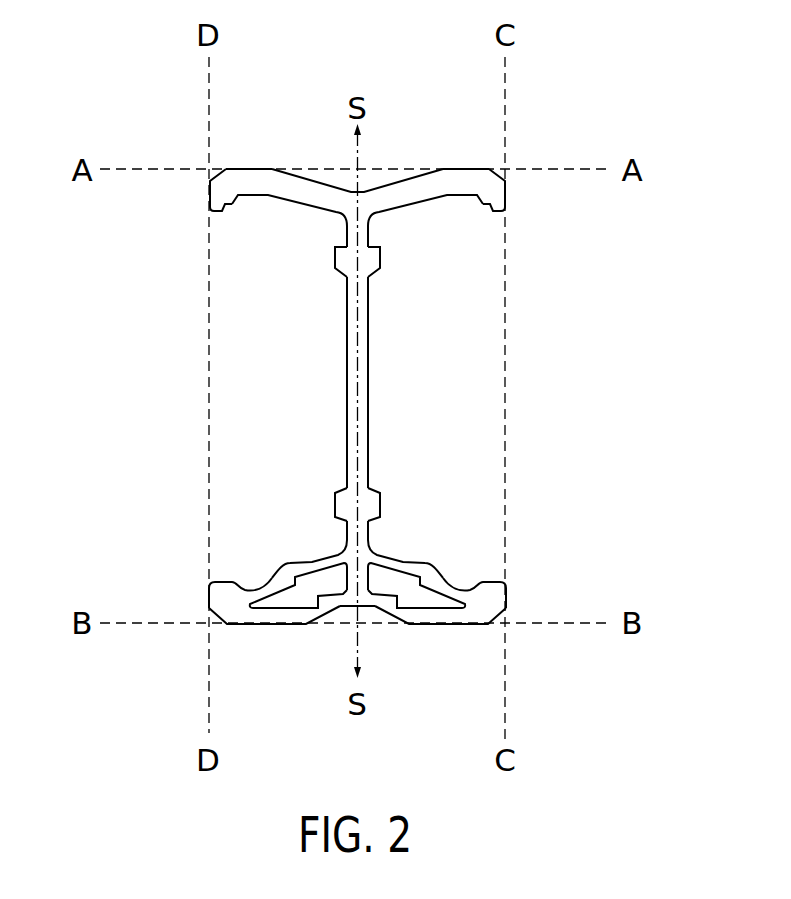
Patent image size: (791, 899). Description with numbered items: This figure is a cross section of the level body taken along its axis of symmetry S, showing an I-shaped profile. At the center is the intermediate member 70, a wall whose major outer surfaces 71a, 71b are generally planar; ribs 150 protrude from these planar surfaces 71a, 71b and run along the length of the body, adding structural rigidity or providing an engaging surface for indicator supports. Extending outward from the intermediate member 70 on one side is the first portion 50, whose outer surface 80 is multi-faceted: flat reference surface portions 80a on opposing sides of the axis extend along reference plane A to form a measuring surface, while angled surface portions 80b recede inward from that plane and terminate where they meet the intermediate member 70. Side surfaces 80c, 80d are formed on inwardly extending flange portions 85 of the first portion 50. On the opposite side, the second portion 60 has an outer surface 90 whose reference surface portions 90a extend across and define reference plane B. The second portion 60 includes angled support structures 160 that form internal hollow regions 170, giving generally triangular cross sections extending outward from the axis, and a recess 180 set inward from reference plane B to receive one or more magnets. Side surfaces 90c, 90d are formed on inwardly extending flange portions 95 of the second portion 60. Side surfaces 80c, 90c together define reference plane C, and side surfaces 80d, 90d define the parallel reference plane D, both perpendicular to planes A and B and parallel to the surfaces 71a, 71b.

The first portion 50 is at (320, 188).
The second portion 60 is at (347, 584).
The intermediate member 70 is at (371, 410).
The planar surface 71a is at (369, 342).
The planar surface 71b is at (347, 377).
The outer surface 80 is at (236, 162).
The reference surface portions 80a is at (250, 167).
The angled surface portions 80b is at (310, 179).
The side surface 80c is at (506, 194).
The side surface 80d is at (210, 197).
The inwardly extending flange portions 85 is at (223, 211).
The outer surface 90 is at (243, 628).
The reference surface portions 90a is at (263, 627).
The side surface 90c is at (507, 600).
The side surface 90d is at (209, 598).
The inwardly extending flange portions 95 is at (220, 583).
The ribs 150 is at (380, 258).
The angled support structures 160 is at (323, 562).
The internal hollow regions 170 is at (287, 600).
The recess 180 is at (369, 617).